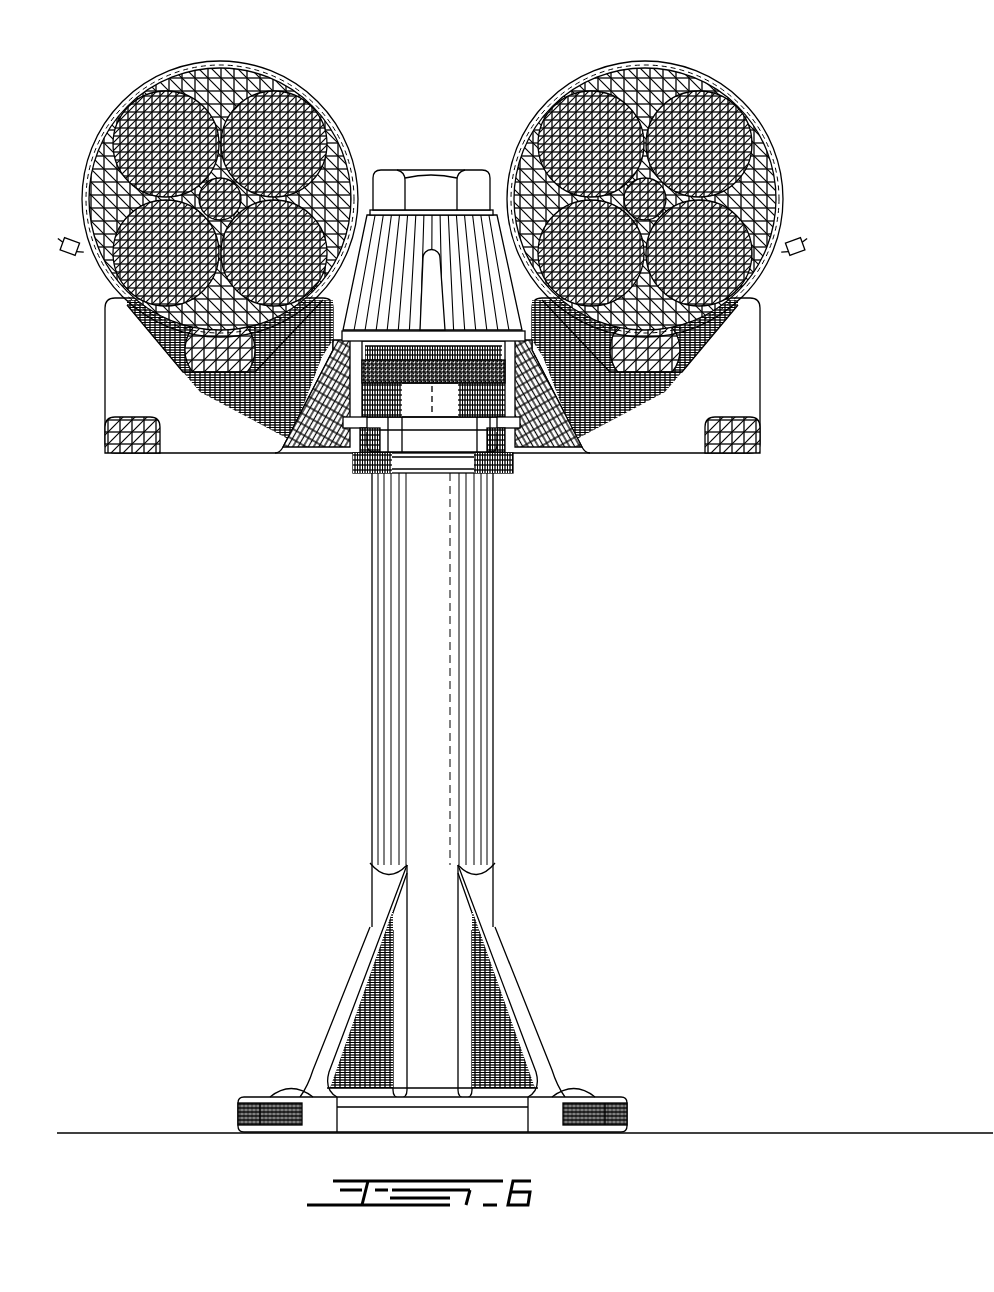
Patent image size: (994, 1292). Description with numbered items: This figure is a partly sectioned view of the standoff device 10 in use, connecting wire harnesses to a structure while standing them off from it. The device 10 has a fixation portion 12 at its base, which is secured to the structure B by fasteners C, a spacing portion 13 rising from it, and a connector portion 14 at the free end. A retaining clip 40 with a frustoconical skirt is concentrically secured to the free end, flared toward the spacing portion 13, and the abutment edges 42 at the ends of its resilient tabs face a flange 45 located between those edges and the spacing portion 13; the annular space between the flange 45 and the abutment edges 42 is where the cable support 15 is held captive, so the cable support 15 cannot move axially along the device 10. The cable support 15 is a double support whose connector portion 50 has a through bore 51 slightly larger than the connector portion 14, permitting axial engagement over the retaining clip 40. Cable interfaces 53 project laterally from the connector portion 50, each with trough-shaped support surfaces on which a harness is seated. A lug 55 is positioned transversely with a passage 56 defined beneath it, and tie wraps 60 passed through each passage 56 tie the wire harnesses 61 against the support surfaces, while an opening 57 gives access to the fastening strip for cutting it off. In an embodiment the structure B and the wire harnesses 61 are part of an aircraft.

The standoff device 10 is at (431, 566).
The fixation portion 12 is at (448, 997).
The spacing portion 13 is at (508, 752).
The connector portion 14 is at (420, 150).
The cable support 15 is at (431, 311).
The retaining clip 40 is at (478, 250).
The abutment edges 42 is at (337, 348).
The flange 45 is at (412, 478).
The connector portion 50 is at (525, 470).
The through bore 51 is at (386, 404).
The cable interfaces 53 is at (117, 463).
The lug 55 is at (233, 356).
The passage 56 is at (133, 374).
The opening 57 is at (227, 392).
The tie wraps 60 is at (436, 168).
The wire harnesses 61 is at (221, 92).
The structure B is at (735, 1130).
The fasteners C is at (288, 1088).